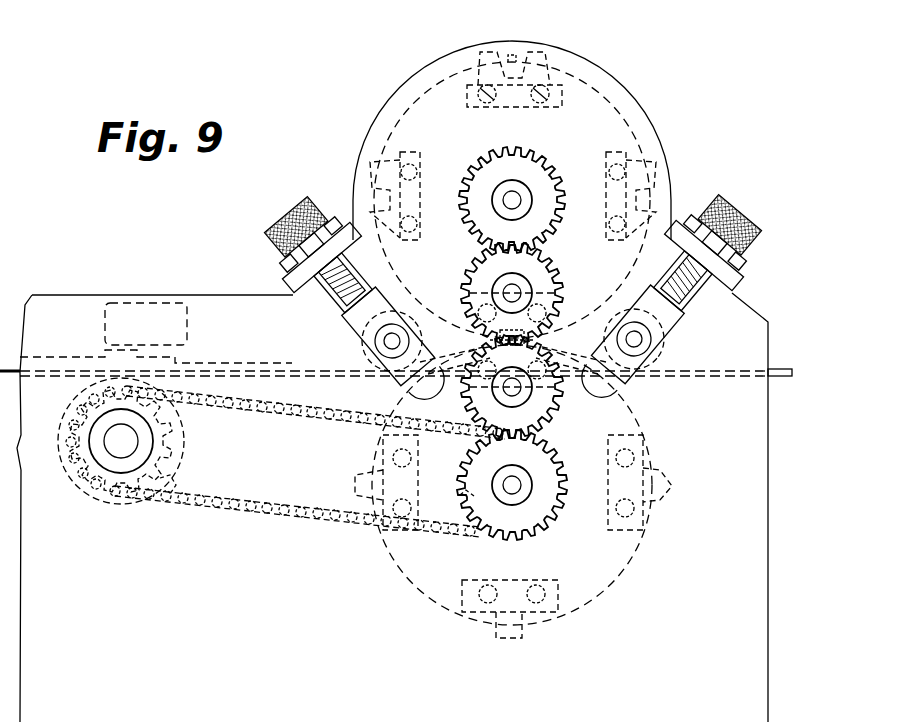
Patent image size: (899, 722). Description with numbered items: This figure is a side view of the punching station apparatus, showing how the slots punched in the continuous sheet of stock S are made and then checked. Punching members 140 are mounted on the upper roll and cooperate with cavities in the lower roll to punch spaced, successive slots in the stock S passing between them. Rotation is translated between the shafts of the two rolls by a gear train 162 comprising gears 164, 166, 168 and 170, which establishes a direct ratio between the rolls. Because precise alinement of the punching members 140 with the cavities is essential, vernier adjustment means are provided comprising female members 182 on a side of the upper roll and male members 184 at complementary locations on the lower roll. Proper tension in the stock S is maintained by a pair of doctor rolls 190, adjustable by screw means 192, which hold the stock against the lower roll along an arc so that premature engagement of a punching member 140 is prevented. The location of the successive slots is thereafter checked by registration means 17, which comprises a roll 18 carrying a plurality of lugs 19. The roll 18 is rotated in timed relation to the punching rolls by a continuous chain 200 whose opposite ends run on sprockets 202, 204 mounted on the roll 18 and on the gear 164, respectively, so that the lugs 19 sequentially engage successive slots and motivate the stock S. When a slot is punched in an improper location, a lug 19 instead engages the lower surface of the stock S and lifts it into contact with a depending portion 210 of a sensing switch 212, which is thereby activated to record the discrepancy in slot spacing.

The registration means 17 is at (148, 290).
The roll 18 is at (178, 478).
The lugs 19 is at (188, 440).
The punching members 140 is at (516, 56).
The gear train 162 is at (585, 413).
The gear 164 is at (540, 515).
The gear 166 is at (545, 406).
The gear 168 is at (553, 283).
The gear 170 is at (545, 168).
The female members 182 is at (555, 62).
The male members 184 is at (670, 484).
The doctor rolls 190 is at (375, 368).
The screw means 192 is at (322, 304).
The continuous chain 200 is at (250, 528).
The sprocket 202 is at (160, 500).
The sprocket 204 is at (460, 500).
The depending portion 210 is at (178, 356).
The sensing switch 212 is at (190, 328).
The stock S is at (748, 368).